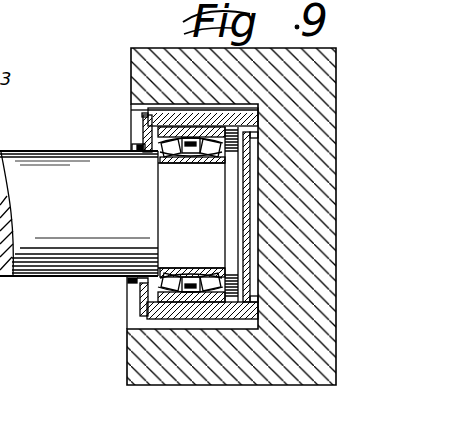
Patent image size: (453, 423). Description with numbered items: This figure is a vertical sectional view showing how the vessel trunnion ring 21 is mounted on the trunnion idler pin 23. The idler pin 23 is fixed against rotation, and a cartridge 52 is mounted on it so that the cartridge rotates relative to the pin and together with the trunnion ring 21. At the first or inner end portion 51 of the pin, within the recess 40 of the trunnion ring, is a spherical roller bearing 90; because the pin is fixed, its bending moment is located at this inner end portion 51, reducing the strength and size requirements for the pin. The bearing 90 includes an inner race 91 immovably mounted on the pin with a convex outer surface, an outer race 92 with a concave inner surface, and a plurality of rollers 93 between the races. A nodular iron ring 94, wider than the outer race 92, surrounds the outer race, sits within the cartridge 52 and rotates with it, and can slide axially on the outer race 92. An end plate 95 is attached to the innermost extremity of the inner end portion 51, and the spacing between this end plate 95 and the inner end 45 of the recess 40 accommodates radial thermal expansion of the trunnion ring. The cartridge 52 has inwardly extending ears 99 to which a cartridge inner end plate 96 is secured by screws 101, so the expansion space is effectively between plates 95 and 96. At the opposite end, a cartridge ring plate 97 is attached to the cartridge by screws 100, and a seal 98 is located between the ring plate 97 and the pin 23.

The trunnion ring 21 is at (137, 68).
The trunnion idler pin 23 is at (31, 172).
The recess 40 is at (170, 108).
The inner end of recess 45 is at (254, 222).
The first or inner end portion 51 is at (164, 196).
The cartridge 52 is at (258, 126).
The spherical roller bearing 90 is at (151, 160).
The inner race 91 is at (180, 161).
The outer race 92 is at (208, 329).
The rollers 93 is at (183, 275).
The nodular iron ring 94 is at (224, 108).
The end plate 95 is at (229, 246).
The cartridge inner end plate 96 is at (258, 192).
The cartridge ring plate 97 is at (146, 140).
The seal 98 is at (128, 281).
The ears 99 is at (239, 167).
The screws 100 is at (149, 114).
The screws 101 is at (256, 140).